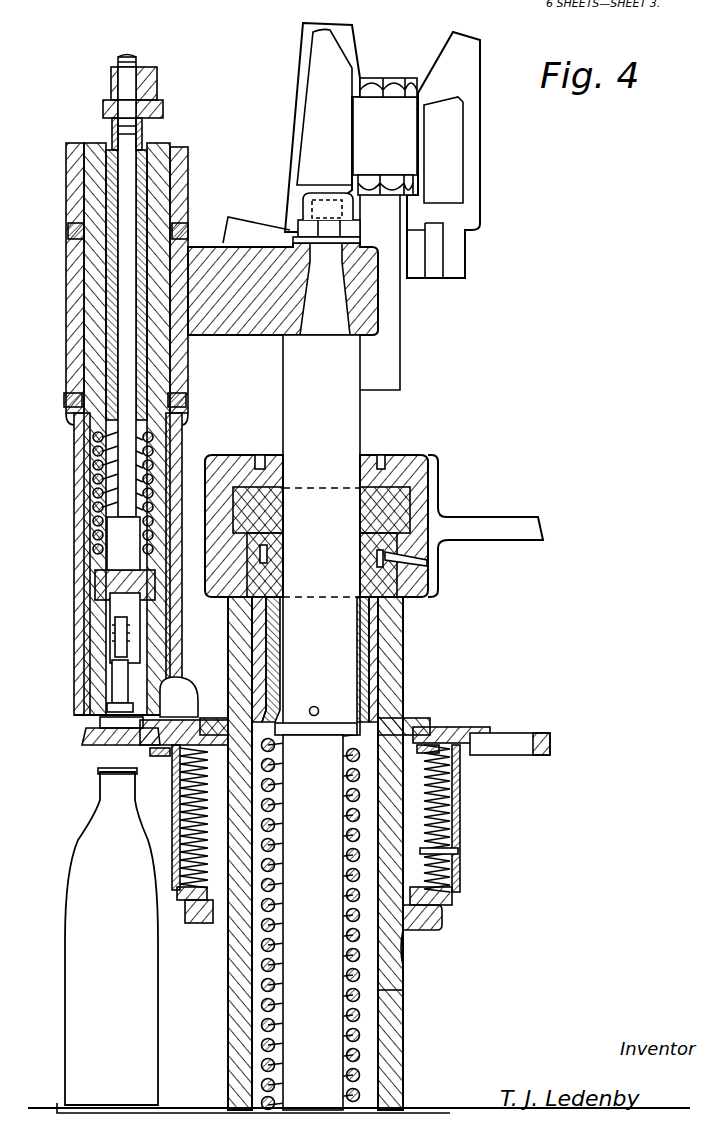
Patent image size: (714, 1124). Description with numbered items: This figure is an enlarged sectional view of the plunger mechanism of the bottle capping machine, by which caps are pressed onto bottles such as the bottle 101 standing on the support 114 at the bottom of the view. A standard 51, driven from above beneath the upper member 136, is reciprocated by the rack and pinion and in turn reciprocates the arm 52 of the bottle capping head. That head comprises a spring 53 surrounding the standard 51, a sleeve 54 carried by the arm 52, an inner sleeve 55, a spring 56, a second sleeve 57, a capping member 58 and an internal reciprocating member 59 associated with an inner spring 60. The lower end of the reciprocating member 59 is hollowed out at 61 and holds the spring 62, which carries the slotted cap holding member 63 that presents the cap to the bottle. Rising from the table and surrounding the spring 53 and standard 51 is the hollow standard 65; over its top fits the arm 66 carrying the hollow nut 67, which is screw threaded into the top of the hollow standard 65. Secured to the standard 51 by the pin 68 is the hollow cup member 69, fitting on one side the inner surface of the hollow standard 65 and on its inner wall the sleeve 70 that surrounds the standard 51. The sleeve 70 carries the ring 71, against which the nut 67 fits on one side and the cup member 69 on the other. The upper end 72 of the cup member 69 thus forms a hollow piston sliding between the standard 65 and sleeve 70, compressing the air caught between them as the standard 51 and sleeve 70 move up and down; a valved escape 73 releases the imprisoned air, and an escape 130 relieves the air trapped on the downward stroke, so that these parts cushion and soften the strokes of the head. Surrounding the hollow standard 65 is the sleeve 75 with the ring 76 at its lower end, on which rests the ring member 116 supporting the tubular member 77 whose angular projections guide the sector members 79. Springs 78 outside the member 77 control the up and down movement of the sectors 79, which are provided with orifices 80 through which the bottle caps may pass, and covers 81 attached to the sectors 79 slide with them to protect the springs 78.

The yoke 136 is at (427, 42).
The arm 52 is at (243, 318).
The sleeve 54 is at (173, 449).
The inner sleeve 55 is at (102, 428).
The spring 56 is at (98, 494).
The second sleeve 57 is at (100, 571).
The capping member 58 is at (97, 634).
The internal reciprocating member 59 is at (118, 531).
The inner spring 60 is at (105, 455).
The hollowed lower end 61 is at (133, 627).
The spring 62 is at (133, 651).
The slotted cap holding member 63 is at (127, 695).
The standard 51 is at (340, 447).
The hollow nut 67 is at (398, 458).
The arm 66 is at (440, 522).
The ring 71 is at (362, 541).
The upper end of cup member 72 is at (367, 586).
The valved escape 73 is at (372, 556).
The sleeve 70 is at (362, 626).
The pin 68 is at (315, 706).
The hollow standard 65 is at (410, 640).
The hollow cup member 69 is at (405, 693).
The sector member 79 is at (470, 727).
The orifices 80 is at (515, 745).
The springs 78 is at (447, 818).
The ring or tubular member 77 is at (424, 853).
The covers 81 is at (461, 872).
The ring member 116 is at (455, 903).
The ring 76 is at (443, 927).
The sleeve 75 is at (405, 935).
The escape 130 is at (405, 997).
The spring 53 is at (357, 938).
The bottle 101 is at (82, 918).
The base plate 114 is at (197, 1107).